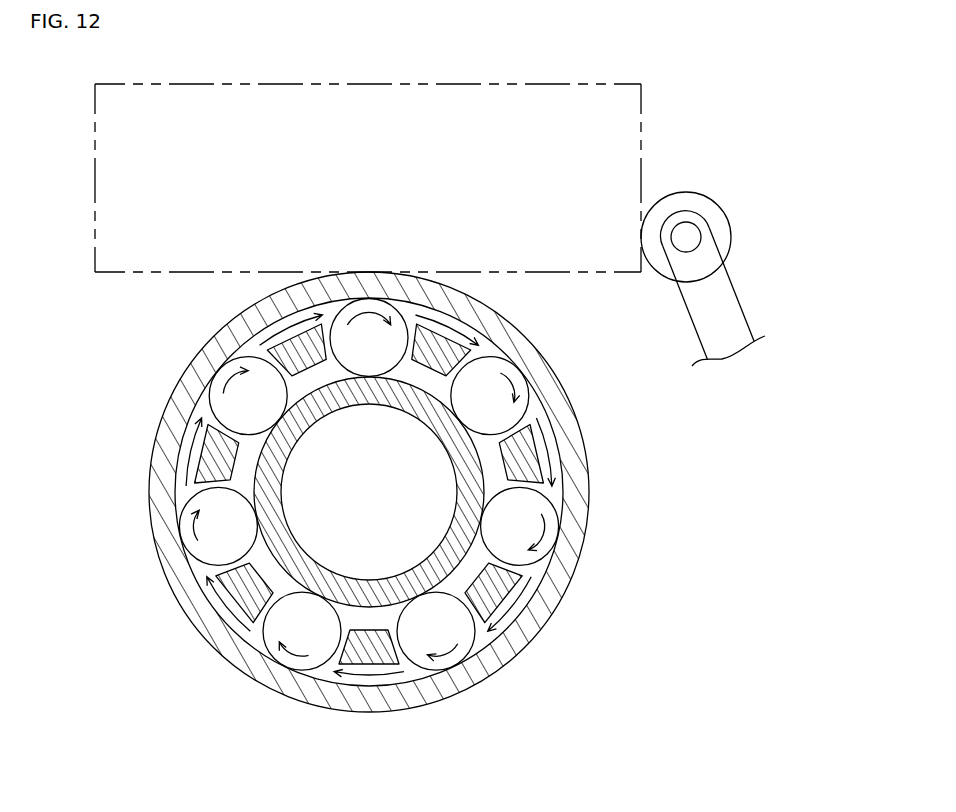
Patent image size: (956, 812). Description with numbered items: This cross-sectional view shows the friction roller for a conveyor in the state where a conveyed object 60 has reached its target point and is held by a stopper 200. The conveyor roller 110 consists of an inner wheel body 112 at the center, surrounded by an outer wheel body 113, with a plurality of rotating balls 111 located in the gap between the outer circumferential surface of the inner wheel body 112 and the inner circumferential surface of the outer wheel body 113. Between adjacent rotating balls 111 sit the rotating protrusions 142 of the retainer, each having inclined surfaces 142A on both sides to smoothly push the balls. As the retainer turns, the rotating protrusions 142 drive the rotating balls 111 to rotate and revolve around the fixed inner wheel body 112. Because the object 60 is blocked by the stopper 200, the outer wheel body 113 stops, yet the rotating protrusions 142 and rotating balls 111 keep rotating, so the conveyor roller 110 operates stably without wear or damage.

The object 60 is at (641, 113).
The stopper 200 is at (690, 203).
The conveyor roller 110 is at (381, 484).
The rotating ball 111 is at (207, 362).
The inner wheel body 112 is at (431, 575).
The outer wheel body 113 is at (577, 557).
The rotating protrusion 142 is at (438, 347).
The inclined surface 142A is at (383, 320).